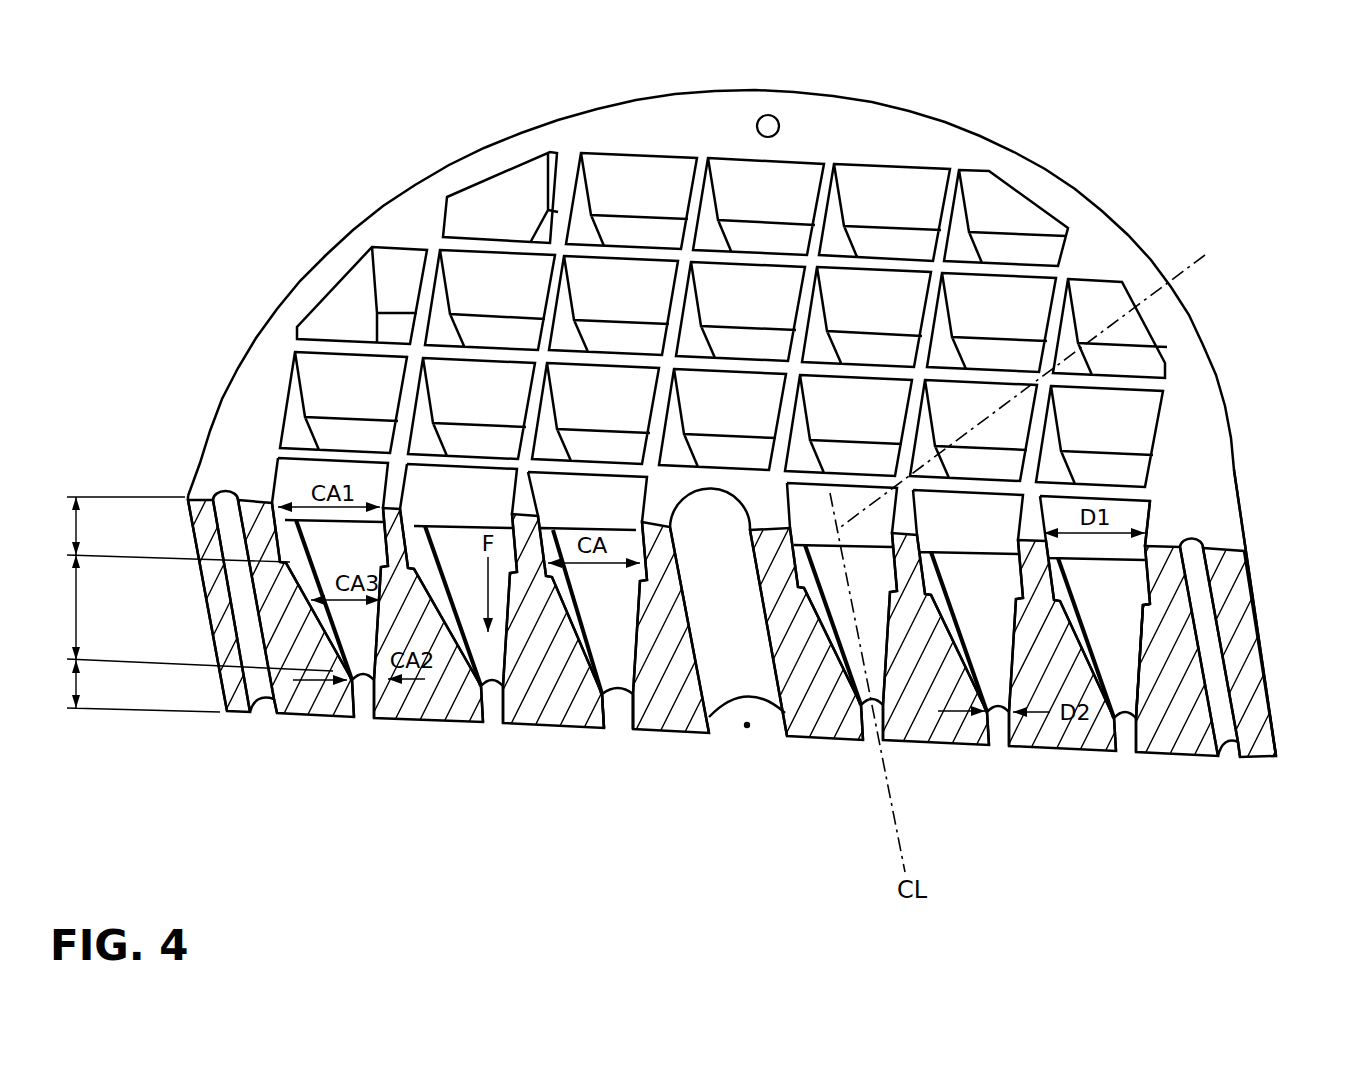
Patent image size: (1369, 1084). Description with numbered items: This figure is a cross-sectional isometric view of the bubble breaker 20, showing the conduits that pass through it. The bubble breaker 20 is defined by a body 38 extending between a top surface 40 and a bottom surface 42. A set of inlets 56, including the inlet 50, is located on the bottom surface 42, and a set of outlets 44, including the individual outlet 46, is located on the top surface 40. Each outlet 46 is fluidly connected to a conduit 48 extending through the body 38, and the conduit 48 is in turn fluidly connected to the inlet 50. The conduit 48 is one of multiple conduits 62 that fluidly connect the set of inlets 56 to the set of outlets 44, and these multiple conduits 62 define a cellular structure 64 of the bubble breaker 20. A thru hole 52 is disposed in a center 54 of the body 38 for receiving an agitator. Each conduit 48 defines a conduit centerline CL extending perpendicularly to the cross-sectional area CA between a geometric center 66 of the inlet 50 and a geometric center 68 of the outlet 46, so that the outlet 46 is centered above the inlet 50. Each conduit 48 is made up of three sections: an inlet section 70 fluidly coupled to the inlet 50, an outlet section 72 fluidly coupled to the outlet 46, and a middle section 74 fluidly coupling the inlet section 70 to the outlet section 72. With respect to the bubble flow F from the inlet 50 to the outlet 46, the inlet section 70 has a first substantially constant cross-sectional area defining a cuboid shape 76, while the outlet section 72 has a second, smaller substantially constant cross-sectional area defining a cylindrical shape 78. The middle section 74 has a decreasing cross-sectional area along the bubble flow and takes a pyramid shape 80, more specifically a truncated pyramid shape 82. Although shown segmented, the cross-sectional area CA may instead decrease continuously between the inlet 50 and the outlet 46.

The bubble breaker 20 is at (243, 142).
The body 38 is at (803, 690).
The top surface 40 is at (527, 708).
The bottom surface 42 is at (1170, 460).
The set of outlets 44 is at (998, 752).
The outlet 46 is at (616, 712).
The conduit 48 is at (596, 612).
The inlet 50 is at (792, 160).
The thru hole 52 is at (710, 612).
The center 54 is at (746, 729).
The set of inlets 56 is at (639, 182).
The multiple conduits 62 is at (506, 187).
The cellular structure 64 is at (446, 665).
The geometric center of the inlet 66 is at (1037, 378).
The geometric center of the outlet 68 is at (870, 714).
The inlet section 70 is at (162, 529).
The outlet section 72 is at (127, 686).
The middle section 74 is at (185, 613).
The cuboid shape 76 is at (1156, 506).
The cylindrical shape 78 is at (1143, 716).
The pyramid shape 80 is at (1150, 630).
The truncated pyramid shape 82 is at (1143, 661).